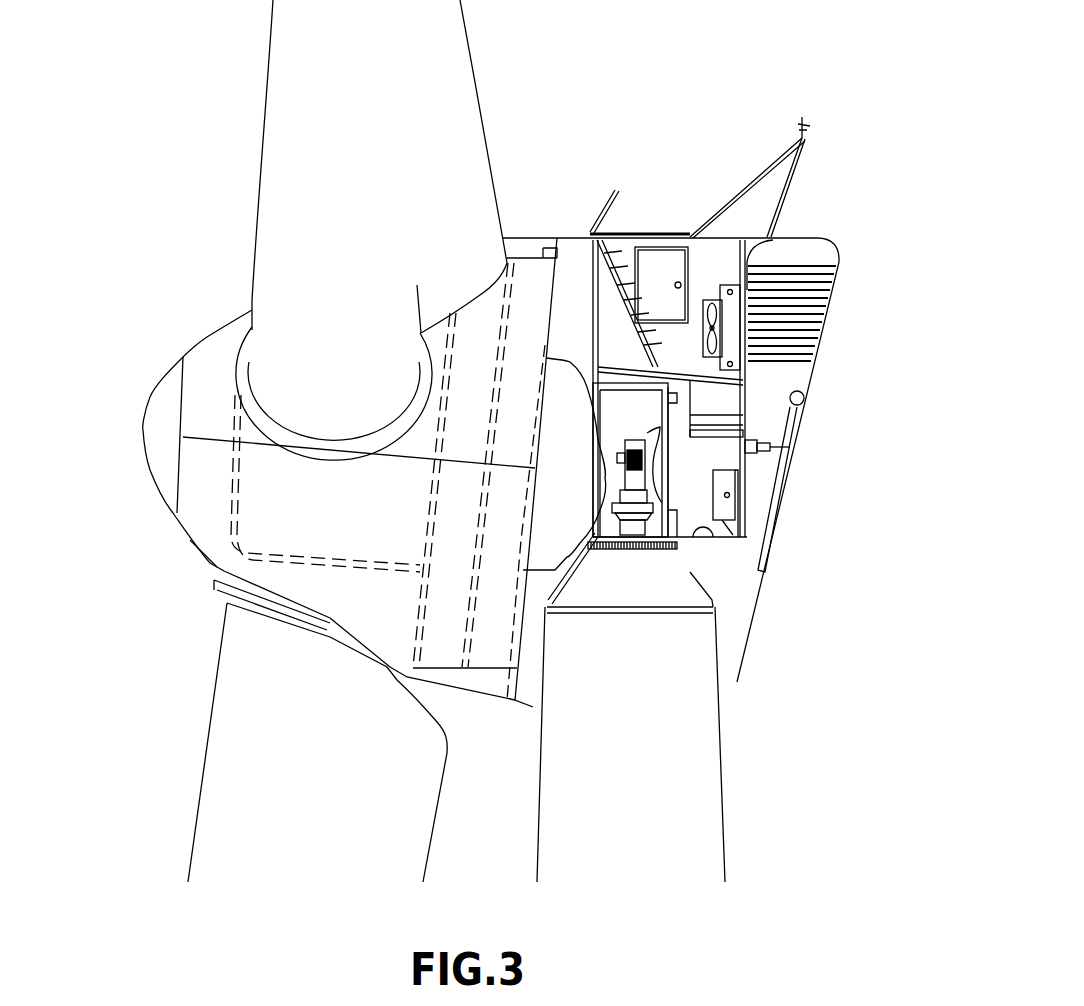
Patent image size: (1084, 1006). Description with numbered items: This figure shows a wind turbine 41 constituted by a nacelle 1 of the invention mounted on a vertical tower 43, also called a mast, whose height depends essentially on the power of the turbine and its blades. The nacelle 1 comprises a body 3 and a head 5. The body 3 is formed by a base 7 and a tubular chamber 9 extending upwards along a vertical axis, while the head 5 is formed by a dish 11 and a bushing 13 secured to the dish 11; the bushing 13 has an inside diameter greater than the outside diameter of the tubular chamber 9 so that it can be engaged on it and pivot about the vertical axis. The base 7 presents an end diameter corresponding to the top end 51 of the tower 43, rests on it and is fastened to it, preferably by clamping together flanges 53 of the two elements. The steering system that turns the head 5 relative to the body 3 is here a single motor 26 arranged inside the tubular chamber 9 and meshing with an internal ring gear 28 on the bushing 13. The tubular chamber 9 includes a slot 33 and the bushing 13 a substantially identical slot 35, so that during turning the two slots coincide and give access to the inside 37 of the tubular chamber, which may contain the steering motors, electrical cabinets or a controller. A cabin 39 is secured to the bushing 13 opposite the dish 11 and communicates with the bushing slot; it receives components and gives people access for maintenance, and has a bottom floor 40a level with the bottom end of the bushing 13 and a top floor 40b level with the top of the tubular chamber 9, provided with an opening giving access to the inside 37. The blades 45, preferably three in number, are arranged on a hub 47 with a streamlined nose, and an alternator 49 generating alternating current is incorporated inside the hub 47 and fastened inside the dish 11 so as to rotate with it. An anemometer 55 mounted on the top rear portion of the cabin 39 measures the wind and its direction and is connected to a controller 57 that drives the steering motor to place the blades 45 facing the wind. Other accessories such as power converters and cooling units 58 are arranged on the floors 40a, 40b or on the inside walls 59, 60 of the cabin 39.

The wind turbine nacelle 1 is at (573, 327).
The body 3 is at (722, 592).
The head 5 is at (560, 571).
The base 7 is at (667, 590).
The tubular chamber 9 is at (655, 347).
The dish 11 is at (574, 540).
The bushing 13 is at (805, 398).
The single motor 26 is at (630, 446).
The internal ring gear 28 is at (680, 546).
The slot 33 is at (658, 477).
The slot 35 is at (670, 400).
The inside of the tubular chamber 37 is at (649, 429).
The cabin 39 is at (788, 494).
The bottom floor 40a is at (717, 541).
The top floor 40b is at (624, 385).
The wind turbine 41 is at (672, 82).
The tower 43 is at (718, 776).
The blades 45 is at (455, 62).
The hub 47 is at (208, 353).
The alternator 49 is at (525, 297).
The top end of the tower 51 is at (614, 612).
The flanges 53 is at (648, 612).
The anemometer 55 is at (806, 133).
The controller 57 is at (725, 512).
The cooling units 58 is at (730, 288).
The inside wall 59 is at (745, 460).
The inside wall 60 is at (747, 262).